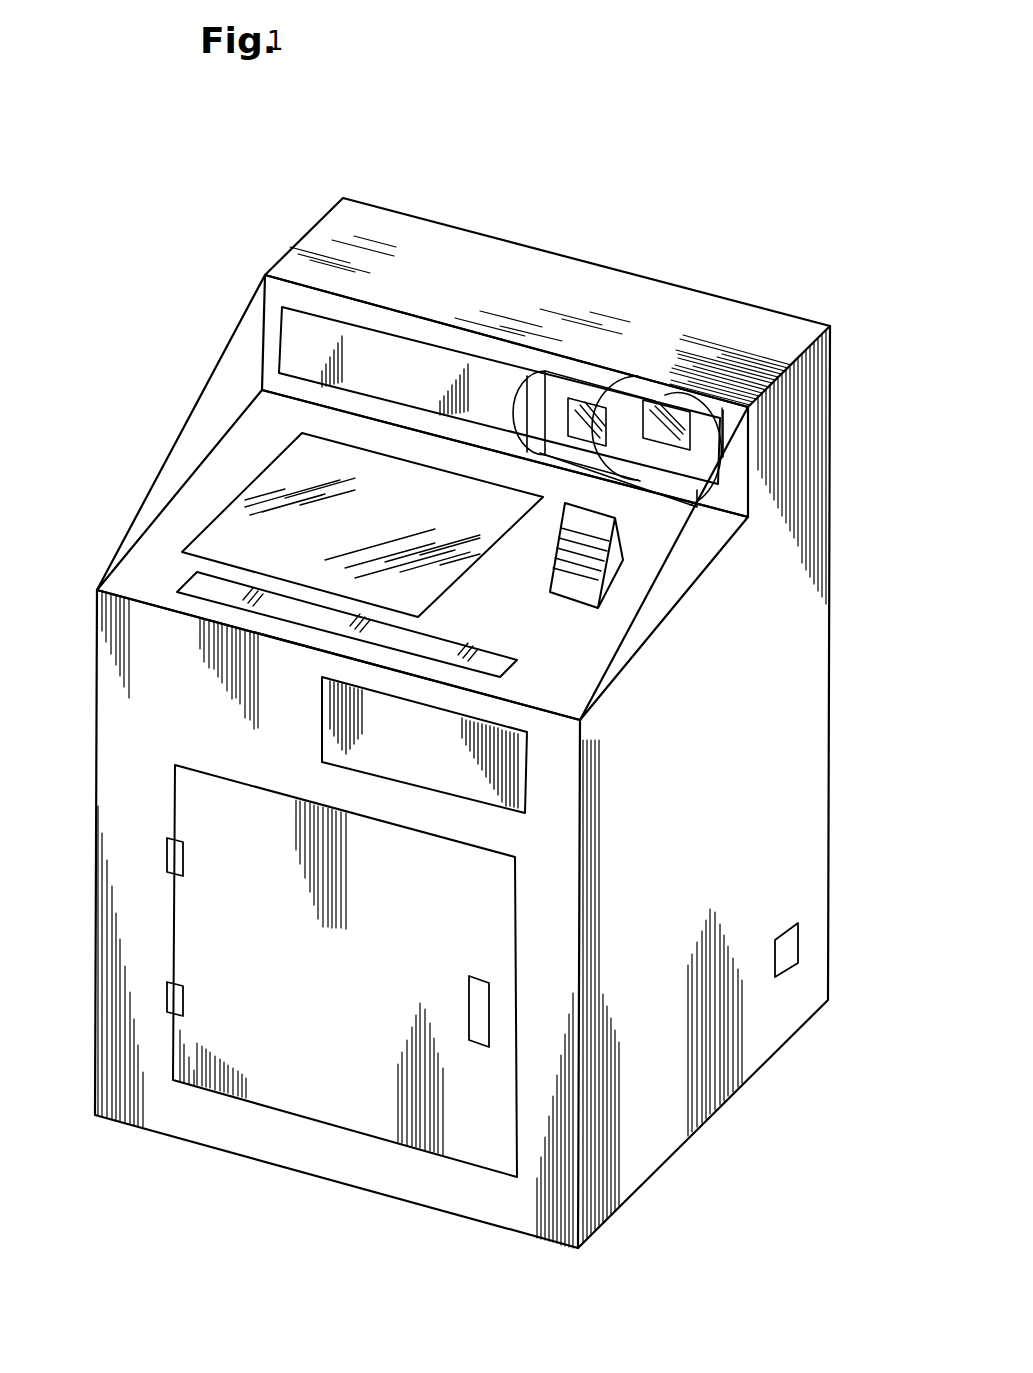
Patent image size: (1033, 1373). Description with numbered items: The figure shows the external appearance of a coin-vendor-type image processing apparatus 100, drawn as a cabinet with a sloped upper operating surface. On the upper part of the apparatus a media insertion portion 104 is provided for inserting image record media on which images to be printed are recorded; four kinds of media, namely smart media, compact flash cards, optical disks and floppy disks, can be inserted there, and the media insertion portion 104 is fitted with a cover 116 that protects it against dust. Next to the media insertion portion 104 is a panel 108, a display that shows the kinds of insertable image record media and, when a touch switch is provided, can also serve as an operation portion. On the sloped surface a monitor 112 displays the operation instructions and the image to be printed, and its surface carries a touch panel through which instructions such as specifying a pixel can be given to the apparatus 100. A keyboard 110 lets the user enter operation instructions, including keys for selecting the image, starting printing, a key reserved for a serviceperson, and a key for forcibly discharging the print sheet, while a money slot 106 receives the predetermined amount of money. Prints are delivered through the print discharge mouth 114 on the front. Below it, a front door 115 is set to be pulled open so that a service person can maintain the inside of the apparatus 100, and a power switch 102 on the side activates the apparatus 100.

The image processing apparatus 100 is at (509, 238).
The power switch 102 is at (798, 945).
The media insertion portion 104 is at (623, 427).
The money slot 106 is at (623, 563).
The panel 108 is at (307, 337).
The keyboard 110 is at (190, 587).
The monitor 112 is at (243, 523).
The print discharge mouth 114 is at (527, 767).
The front door 115 is at (520, 940).
The cover 116 is at (723, 422).